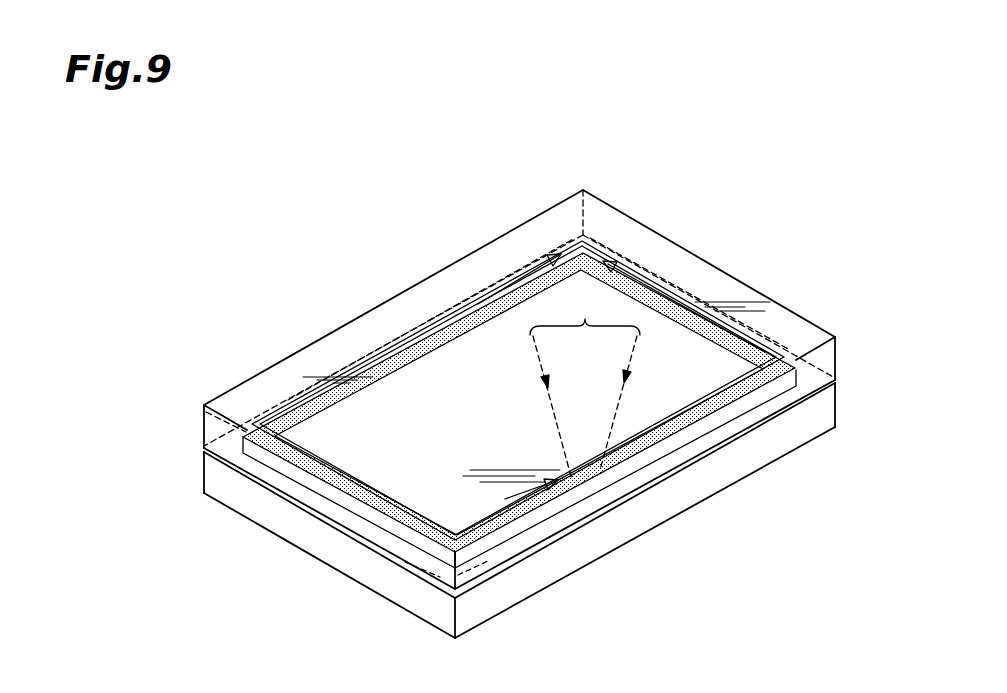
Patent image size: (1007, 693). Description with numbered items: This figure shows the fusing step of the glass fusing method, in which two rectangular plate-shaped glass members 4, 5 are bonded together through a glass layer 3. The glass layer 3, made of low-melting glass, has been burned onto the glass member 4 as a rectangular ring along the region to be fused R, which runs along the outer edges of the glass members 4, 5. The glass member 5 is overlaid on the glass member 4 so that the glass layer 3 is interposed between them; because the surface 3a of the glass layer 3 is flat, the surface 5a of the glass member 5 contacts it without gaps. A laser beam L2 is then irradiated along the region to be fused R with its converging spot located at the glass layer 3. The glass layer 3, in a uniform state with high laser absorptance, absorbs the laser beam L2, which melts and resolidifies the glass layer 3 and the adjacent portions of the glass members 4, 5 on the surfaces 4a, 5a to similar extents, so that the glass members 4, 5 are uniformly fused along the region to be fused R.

The glass layer 3 is at (330, 505).
The surface of the glass layer 3a is at (300, 395).
The glass member 4 is at (838, 403).
The surface of the glass member 4a is at (470, 573).
The glass member 5 is at (838, 350).
The surface of the glass member 5a is at (519, 427).
The region to be fused R is at (688, 452).
The laser beam L2 is at (585, 387).